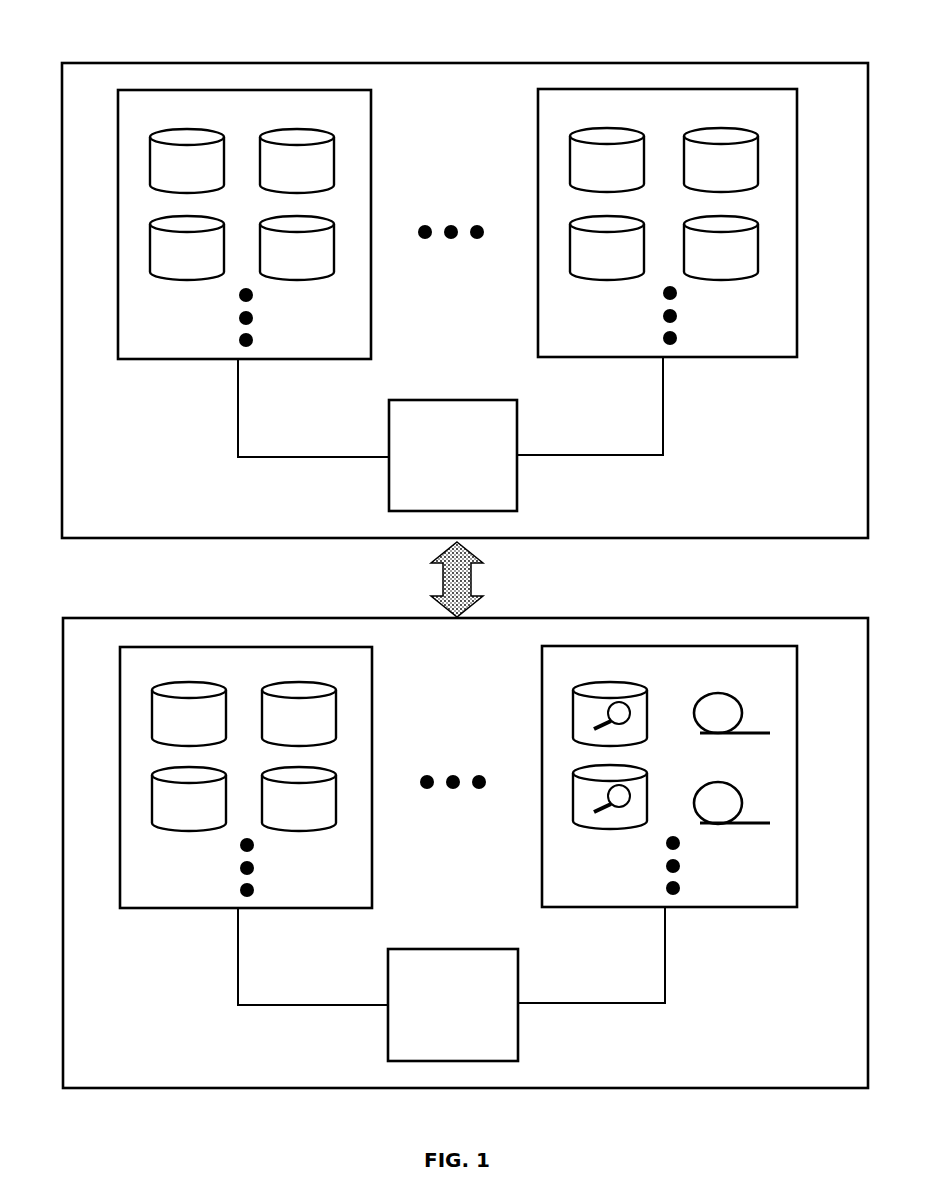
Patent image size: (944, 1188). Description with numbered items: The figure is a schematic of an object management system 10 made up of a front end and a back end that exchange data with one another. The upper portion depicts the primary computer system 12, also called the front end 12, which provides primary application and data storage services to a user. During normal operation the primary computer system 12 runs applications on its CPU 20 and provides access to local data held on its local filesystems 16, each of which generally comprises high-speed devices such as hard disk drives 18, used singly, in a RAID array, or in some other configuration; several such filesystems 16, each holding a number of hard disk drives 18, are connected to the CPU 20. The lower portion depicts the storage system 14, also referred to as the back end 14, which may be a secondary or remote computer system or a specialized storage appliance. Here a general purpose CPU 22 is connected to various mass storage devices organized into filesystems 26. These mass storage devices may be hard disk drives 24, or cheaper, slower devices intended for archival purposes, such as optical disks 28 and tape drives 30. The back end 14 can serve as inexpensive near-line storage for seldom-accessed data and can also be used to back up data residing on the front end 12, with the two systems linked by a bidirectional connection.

The object management system 10 is at (66, 20).
The primary computer system 12 is at (222, 539).
The storage system 14 is at (222, 1089).
The local filesystem 16 is at (148, 361).
The hard disk drive 18 is at (173, 130).
The CPU 20 is at (389, 480).
The general purpose CPU 22 is at (388, 1028).
The hard disk drive 24 is at (175, 683).
The filesystem 26 is at (148, 909).
The optical disk 28 is at (596, 682).
The tape drive 30 is at (712, 693).